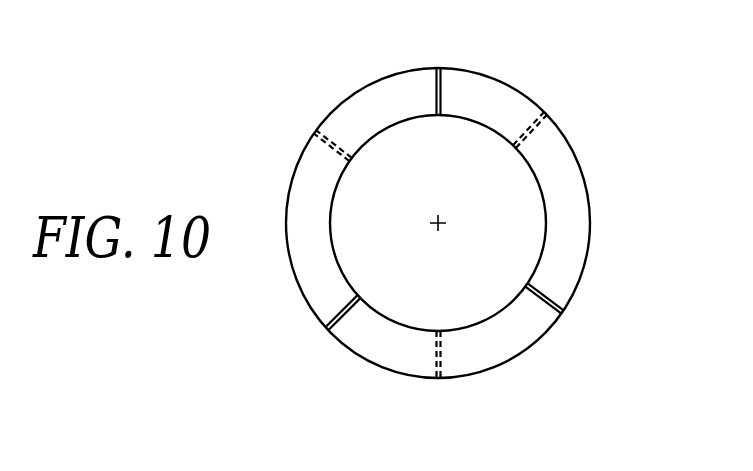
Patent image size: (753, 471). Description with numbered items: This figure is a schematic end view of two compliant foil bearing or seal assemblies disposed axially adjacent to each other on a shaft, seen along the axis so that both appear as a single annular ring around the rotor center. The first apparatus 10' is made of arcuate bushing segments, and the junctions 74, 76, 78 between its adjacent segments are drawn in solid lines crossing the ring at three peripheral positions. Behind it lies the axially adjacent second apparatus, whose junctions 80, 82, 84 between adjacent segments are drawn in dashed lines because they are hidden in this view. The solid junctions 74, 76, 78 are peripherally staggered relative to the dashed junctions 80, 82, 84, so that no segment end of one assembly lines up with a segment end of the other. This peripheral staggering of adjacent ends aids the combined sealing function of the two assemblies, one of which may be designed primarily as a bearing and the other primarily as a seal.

The first apparatus 10' is at (478, 223).
The junction 74 is at (438, 68).
The junction 76 is at (562, 312).
The junction 78 is at (327, 329).
The junction 80 is at (315, 132).
The junction 82 is at (546, 113).
The junction 84 is at (440, 378).